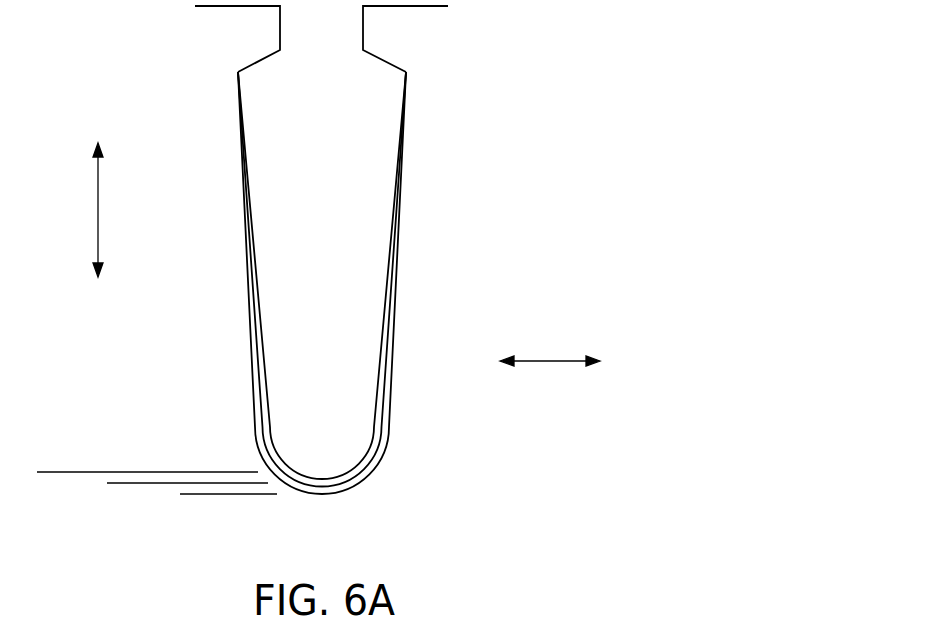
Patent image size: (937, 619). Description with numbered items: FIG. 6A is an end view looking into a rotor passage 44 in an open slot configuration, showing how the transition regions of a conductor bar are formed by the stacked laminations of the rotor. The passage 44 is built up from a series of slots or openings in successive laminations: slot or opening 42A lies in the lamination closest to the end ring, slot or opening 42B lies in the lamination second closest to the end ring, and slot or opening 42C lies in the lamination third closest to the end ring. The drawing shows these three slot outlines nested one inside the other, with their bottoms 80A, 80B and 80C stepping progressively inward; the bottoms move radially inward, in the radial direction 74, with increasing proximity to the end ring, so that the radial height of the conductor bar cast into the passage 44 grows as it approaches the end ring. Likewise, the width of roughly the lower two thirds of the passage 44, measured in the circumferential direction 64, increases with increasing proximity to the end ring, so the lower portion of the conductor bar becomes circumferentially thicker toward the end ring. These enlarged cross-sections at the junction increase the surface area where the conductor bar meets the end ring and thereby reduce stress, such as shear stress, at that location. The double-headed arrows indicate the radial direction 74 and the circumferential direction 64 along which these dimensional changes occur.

The rotor passage 44 is at (335, 217).
The slot or opening 42A is at (389, 423).
The slot or opening 42B is at (378, 455).
The slot or opening 42C is at (371, 443).
The bottom 80A is at (205, 496).
The bottom 80B is at (130, 485).
The bottom 80C is at (56, 474).
The radial direction 74 is at (98, 207).
The circumferential direction 64 is at (545, 360).